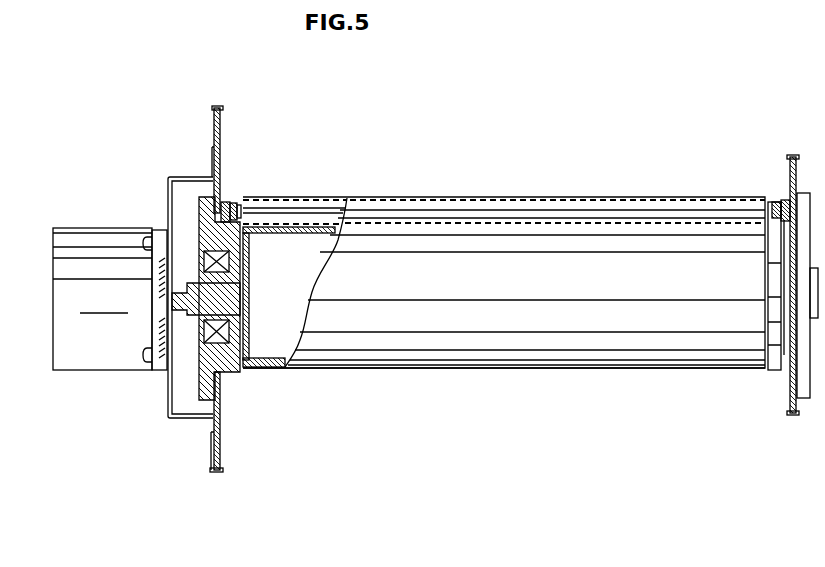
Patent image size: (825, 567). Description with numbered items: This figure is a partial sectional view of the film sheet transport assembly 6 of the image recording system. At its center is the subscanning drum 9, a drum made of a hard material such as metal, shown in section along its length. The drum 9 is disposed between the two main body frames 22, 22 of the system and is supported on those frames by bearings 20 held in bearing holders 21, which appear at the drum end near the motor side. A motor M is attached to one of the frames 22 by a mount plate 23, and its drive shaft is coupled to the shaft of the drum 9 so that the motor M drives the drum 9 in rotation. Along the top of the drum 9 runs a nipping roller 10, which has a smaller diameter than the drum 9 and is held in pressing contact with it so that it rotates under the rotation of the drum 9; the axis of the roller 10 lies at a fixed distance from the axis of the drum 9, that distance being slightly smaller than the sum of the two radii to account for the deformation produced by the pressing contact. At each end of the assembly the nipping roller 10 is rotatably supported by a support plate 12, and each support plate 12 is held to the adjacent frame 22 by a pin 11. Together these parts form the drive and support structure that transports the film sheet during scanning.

The roller assembly 6 is at (481, 272).
The subscanning drum 9 is at (497, 369).
The nipping roller 10 is at (515, 200).
The pin 11 is at (225, 202).
The support plate 12 is at (237, 203).
The bearing 20 is at (232, 330).
The bearing holder 21 is at (216, 372).
The main body frame 22 is at (218, 458).
The mount plate 23 is at (170, 420).
The motor M is at (93, 357).